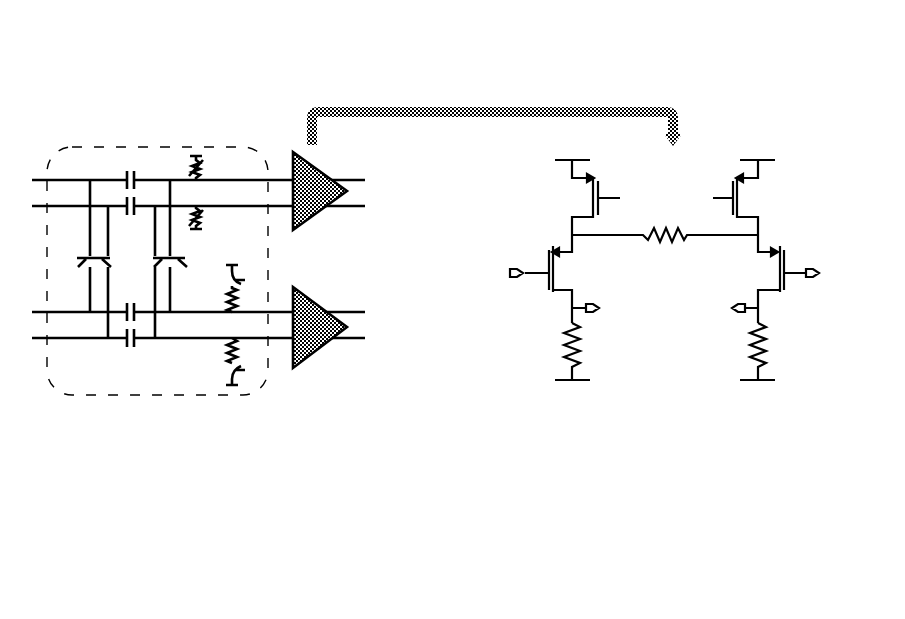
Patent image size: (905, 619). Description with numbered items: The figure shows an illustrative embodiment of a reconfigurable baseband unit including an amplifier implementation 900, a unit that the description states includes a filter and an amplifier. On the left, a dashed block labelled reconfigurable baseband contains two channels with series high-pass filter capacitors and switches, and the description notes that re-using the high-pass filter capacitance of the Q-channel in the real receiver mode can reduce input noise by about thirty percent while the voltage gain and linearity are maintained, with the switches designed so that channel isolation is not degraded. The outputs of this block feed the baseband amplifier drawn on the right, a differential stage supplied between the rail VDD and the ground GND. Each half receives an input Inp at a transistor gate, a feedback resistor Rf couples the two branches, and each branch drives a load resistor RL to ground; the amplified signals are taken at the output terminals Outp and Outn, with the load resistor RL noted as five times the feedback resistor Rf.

The reconfigurable baseband unit including an amplifier implementation 900 is at (211, 62).
The supply voltage rail VDD is at (666, 143).
The ground GND is at (664, 398).
The feedback resistor Rf is at (665, 223).
The load resistor RL is at (665, 351).
The input terminal Inp is at (662, 273).
The positive output terminal Outp is at (608, 310).
The negative output terminal Outn is at (720, 310).